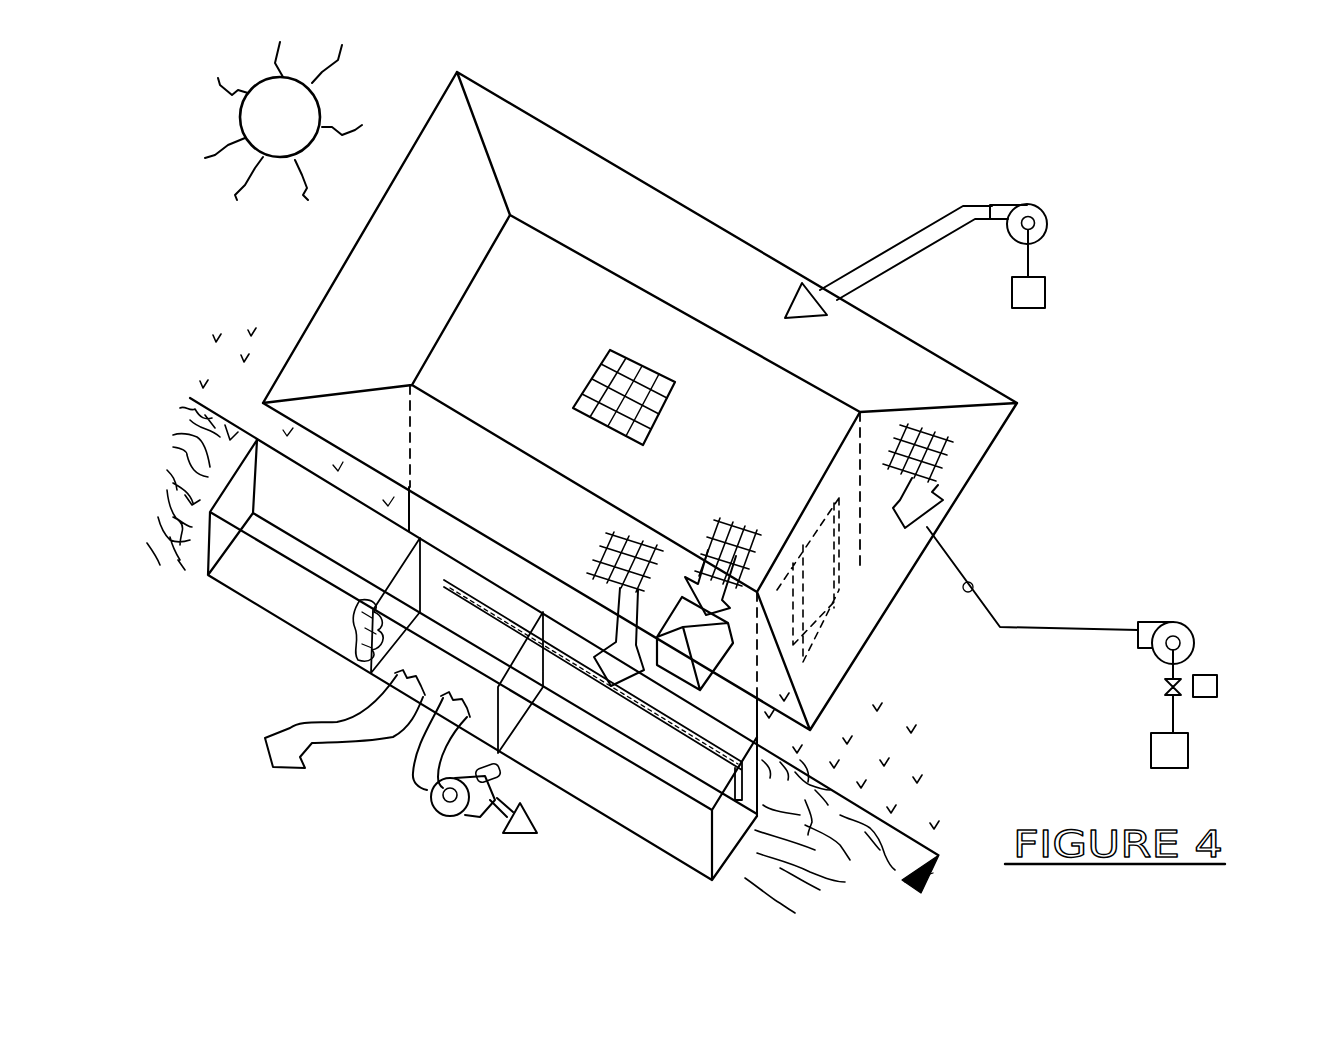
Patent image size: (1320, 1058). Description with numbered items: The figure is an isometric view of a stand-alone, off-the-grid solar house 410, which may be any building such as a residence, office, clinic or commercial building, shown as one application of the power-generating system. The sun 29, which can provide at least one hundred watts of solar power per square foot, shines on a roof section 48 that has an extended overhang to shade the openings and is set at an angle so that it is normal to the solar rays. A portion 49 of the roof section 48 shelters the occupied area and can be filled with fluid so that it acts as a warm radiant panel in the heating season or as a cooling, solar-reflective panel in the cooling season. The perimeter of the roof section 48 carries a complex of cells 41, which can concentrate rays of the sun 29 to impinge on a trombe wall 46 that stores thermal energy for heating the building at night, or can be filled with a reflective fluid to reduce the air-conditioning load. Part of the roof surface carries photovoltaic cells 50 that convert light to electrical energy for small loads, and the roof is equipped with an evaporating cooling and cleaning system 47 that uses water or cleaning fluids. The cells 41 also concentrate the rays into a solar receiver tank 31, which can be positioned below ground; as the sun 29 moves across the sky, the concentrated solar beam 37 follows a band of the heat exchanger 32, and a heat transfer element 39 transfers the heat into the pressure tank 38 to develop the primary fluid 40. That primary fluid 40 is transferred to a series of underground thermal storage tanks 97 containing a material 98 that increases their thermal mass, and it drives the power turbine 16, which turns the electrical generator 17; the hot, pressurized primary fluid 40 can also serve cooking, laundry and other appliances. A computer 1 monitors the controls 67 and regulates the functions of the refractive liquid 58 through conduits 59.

The computer 1 is at (1213, 678).
The power turbine 16 is at (455, 817).
The electrical generator 17 is at (490, 780).
The sun 29 is at (322, 100).
The solar receiver tank 31 is at (757, 795).
The heat exchanger 32 is at (657, 712).
The concentrated solar beam 37 is at (686, 568).
The pressure tank 38 is at (395, 677).
The heat transfer element 39 is at (500, 620).
The primary fluid 40 is at (288, 768).
The cells 41 is at (598, 545).
The trombe wall 46 is at (695, 643).
The evaporating cooling and cleaning system 47 is at (1053, 172).
The roof section 48 is at (497, 95).
The portion of the roof section 49 is at (600, 296).
The photovoltaic cells 50 is at (650, 362).
The refractive liquid 58 is at (1186, 625).
The conduits 59 is at (974, 585).
The controls 67 is at (1162, 688).
The underground thermal storage tanks 97 is at (252, 604).
The material 98 is at (347, 643).
The solar house 410 is at (853, 128).